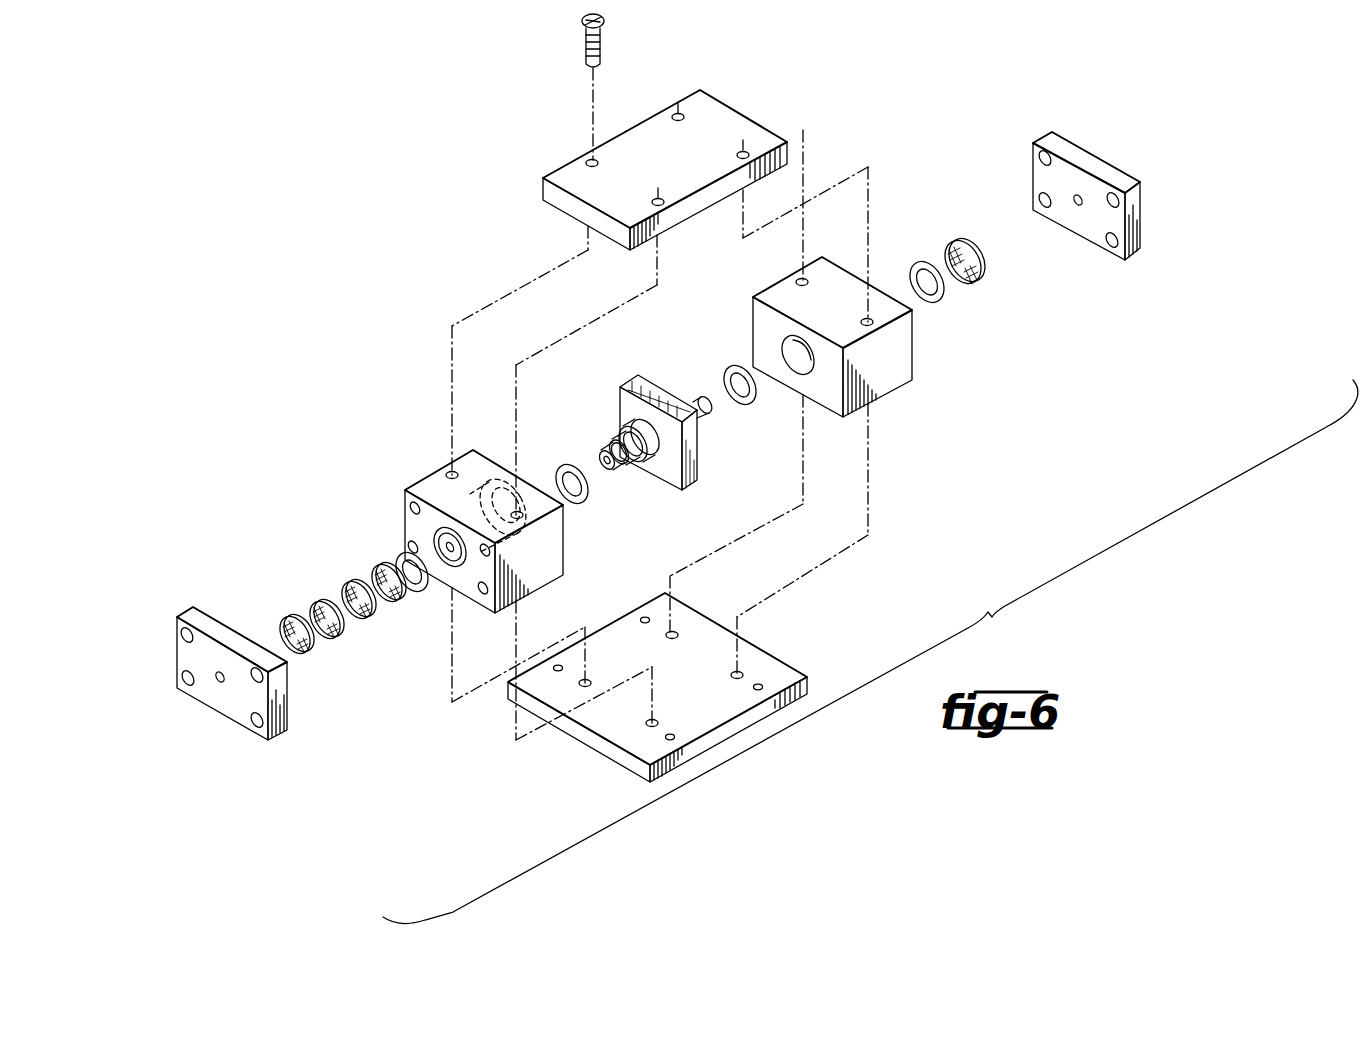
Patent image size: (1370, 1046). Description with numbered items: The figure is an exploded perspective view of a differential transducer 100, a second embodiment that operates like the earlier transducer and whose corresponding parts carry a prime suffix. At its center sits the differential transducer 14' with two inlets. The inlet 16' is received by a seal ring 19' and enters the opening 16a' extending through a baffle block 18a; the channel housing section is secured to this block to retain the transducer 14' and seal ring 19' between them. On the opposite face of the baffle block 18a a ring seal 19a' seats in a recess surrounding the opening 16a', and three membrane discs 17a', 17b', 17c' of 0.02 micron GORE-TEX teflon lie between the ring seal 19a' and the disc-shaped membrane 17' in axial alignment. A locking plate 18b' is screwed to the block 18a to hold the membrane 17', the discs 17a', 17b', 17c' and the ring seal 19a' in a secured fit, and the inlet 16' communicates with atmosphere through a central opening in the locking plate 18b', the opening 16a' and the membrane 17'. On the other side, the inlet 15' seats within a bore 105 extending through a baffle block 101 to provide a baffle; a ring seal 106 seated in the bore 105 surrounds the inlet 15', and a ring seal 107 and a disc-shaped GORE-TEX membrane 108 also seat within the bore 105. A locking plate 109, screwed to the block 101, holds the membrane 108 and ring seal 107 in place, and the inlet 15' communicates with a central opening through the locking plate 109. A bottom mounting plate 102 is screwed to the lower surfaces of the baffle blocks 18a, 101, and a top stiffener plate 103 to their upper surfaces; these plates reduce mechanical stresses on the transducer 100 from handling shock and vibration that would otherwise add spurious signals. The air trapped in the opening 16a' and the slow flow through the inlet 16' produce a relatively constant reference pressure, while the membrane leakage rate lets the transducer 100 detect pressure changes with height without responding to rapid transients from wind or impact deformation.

The differential transducer 100 is at (383, 407).
The baffle block 101 is at (903, 372).
The bottom mounting plate 102 is at (583, 740).
The top stiffener plate 103 is at (562, 168).
The bore 105 is at (782, 347).
The ring seal 106 is at (735, 363).
The ring seal 107 is at (931, 304).
The membrane 108 is at (980, 270).
The locking plate 109 is at (1075, 148).
The differential transducer 14' is at (612, 425).
The inlet 15' is at (729, 431).
The inlet 16' is at (640, 471).
The opening 16a' is at (495, 472).
The membrane 17' is at (271, 623).
The membrane disc 17a' is at (400, 612).
The membrane disc 17b' is at (325, 586).
The membrane disc 17c' is at (344, 654).
The baffle block 18a is at (420, 487).
The locking plate 18b' is at (232, 692).
The seal ring 19' is at (586, 509).
The ring seal 19a' is at (374, 553).